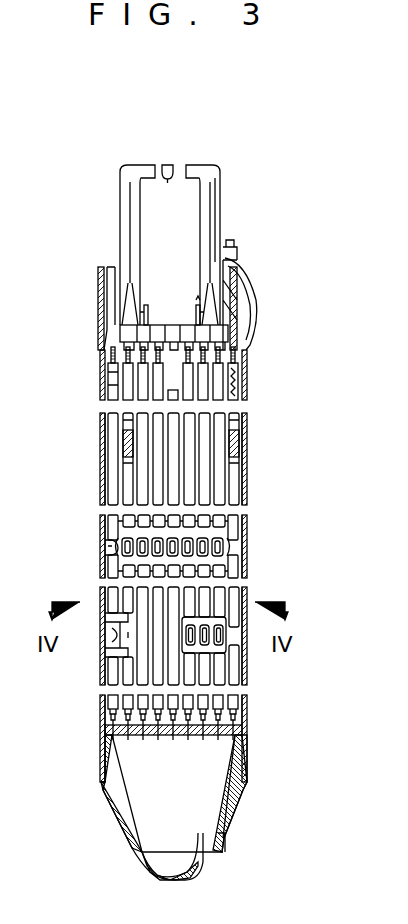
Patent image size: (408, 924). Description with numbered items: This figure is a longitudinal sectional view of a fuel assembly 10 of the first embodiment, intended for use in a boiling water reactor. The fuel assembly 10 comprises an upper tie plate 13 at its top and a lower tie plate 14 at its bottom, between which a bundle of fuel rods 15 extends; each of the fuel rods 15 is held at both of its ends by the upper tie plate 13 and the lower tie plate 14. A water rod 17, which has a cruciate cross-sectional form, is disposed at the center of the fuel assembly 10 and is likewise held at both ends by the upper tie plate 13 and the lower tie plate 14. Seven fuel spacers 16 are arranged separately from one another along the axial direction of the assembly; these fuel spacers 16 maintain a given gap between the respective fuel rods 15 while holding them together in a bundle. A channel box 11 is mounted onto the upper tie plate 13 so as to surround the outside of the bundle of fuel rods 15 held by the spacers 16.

The fuel assembly 10 is at (271, 303).
The channel box 11 is at (101, 471).
The upper tie plate 13 is at (120, 334).
The lower tie plate 14 is at (121, 818).
The fuel rods 15 is at (237, 566).
The fuel spacers 16 is at (104, 562).
The water rod 17 is at (178, 490).